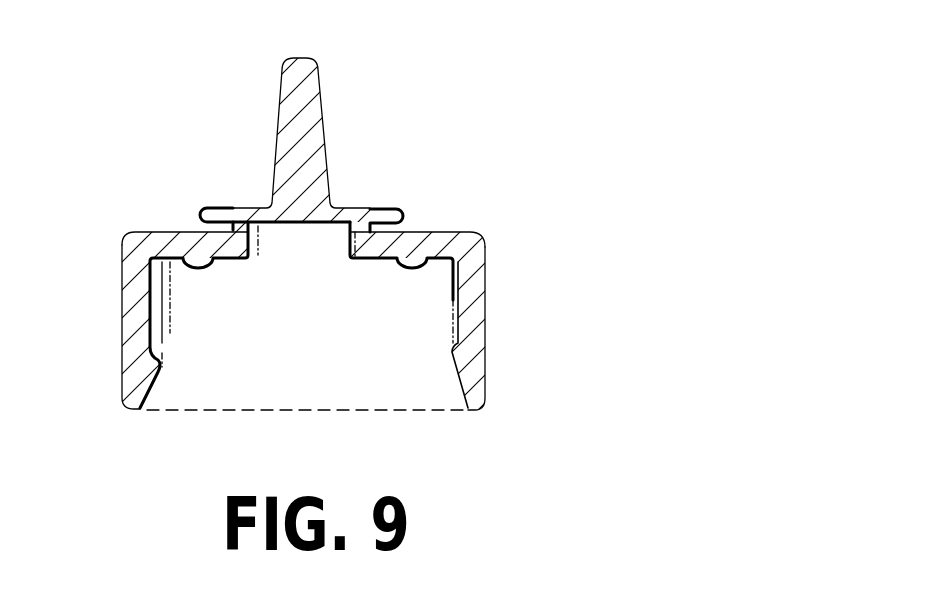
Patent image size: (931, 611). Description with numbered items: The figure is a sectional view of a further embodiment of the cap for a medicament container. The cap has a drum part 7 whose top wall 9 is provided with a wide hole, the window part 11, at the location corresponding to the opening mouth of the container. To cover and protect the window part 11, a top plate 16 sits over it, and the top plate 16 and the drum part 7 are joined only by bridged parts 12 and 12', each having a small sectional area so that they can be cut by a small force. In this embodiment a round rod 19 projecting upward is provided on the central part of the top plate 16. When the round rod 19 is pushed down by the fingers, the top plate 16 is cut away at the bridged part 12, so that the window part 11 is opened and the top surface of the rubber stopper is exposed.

The drum part 7 is at (133, 331).
The top wall 9 is at (185, 240).
The window part 11 is at (302, 237).
The bridged part 12 is at (176, 190).
The bridged part 12' is at (419, 191).
The top plate 16 is at (250, 208).
The round rod 19 is at (305, 110).